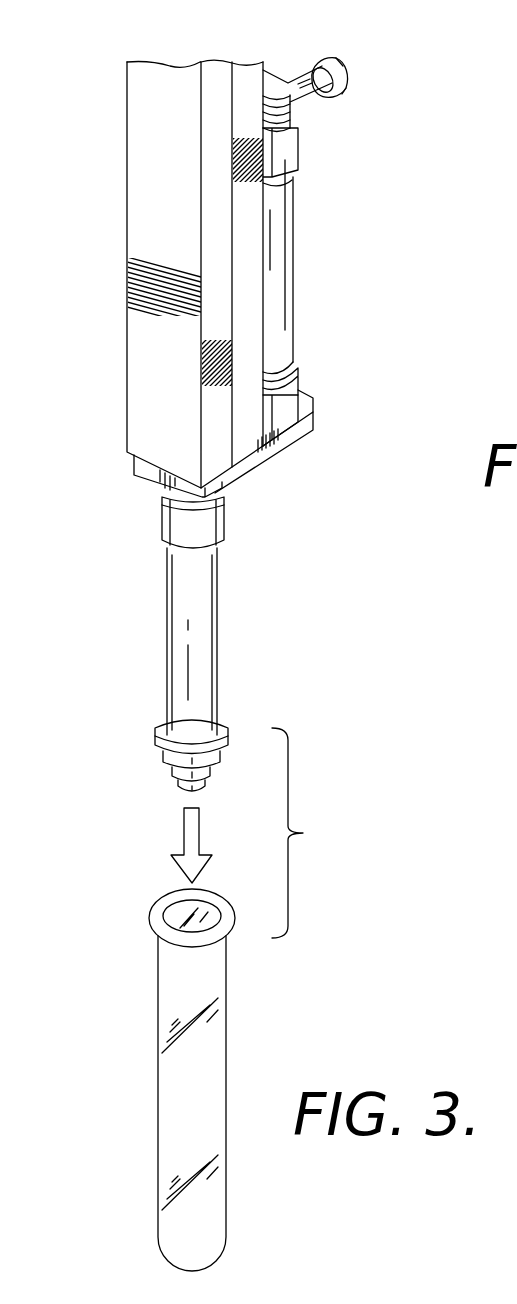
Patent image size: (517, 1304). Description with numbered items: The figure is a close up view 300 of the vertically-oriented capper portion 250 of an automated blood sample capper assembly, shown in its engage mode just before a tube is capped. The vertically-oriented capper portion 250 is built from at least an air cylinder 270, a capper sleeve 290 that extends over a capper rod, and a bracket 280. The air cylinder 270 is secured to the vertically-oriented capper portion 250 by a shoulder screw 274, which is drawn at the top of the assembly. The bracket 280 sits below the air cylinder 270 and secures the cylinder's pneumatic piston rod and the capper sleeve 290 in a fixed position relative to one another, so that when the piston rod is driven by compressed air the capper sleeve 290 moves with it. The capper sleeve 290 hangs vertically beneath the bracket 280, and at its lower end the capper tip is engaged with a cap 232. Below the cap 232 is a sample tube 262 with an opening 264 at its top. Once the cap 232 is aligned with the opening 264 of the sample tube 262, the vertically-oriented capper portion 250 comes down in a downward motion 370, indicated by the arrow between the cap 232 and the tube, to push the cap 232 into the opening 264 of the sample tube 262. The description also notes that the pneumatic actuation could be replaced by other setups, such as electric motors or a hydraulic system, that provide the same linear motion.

The close up view of engage mode 300 is at (92, 90).
The vertically-oriented capper portion 250 is at (133, 173).
The shoulder screw 274 is at (351, 69).
The air cylinder 270 is at (296, 249).
The bracket 280 is at (303, 436).
The capper sleeve 290 is at (167, 598).
The cap 232 is at (156, 750).
The downward motion 370 is at (200, 829).
The opening of sample tube 264 is at (166, 908).
The sample tube 262 is at (218, 1045).